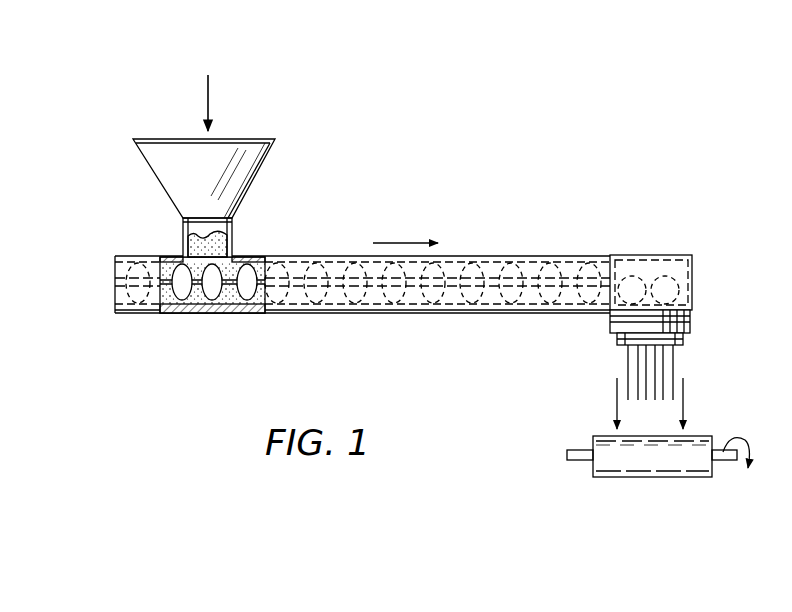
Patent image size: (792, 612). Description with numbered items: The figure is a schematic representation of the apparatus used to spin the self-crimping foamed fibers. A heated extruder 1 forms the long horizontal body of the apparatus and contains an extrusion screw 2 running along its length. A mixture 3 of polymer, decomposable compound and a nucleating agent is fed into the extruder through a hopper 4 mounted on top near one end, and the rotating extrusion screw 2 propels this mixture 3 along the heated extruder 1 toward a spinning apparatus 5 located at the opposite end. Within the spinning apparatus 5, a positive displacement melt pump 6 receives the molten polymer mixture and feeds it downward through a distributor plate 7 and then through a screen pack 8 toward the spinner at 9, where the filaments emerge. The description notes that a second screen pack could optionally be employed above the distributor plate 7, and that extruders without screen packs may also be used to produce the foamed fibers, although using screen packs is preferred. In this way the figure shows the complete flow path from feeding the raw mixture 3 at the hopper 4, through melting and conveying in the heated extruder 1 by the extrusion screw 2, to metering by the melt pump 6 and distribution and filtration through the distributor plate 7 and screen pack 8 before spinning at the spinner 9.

The heated extruder 1 is at (424, 203).
The extrusion screw 2 is at (172, 258).
The mixture 3 is at (230, 253).
The hopper 4 is at (244, 168).
The spinning apparatus 5 is at (700, 262).
The positive displacement melt pump 6 is at (648, 272).
The distributor plate 7 is at (694, 317).
The screen pack 8 is at (694, 326).
The spinner 9 is at (693, 333).